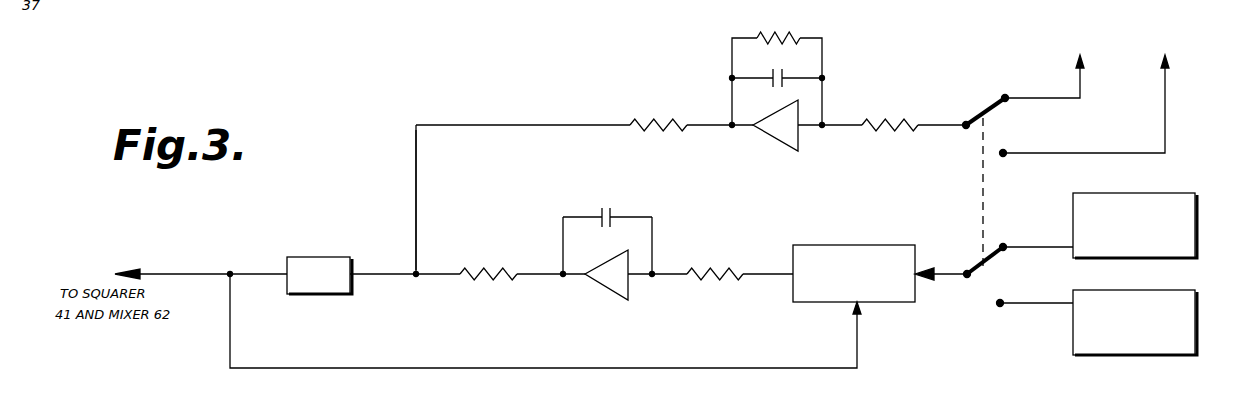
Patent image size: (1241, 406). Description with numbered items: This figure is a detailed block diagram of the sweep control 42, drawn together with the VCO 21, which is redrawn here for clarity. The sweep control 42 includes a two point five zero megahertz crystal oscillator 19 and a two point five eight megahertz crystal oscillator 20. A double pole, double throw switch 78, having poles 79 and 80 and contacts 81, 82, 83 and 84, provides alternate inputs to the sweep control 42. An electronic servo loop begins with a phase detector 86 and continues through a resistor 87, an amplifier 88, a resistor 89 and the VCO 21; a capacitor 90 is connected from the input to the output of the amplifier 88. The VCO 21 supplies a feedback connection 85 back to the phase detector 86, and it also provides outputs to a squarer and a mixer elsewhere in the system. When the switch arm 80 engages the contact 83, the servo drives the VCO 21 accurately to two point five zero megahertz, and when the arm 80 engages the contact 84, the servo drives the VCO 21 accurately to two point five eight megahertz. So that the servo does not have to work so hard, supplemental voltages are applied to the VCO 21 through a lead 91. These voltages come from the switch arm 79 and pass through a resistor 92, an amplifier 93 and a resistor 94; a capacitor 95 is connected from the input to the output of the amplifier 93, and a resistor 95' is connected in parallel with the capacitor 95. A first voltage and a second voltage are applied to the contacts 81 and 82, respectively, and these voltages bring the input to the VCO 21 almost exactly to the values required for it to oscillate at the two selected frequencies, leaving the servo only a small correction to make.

The 2.50 MHz crystal oscillator 19 is at (1182, 192).
The 2.58 MHz crystal oscillator 20 is at (1180, 290).
The VCO 21 is at (306, 256).
The sweep control 42 is at (560, 102).
The double pole, double throw switch 78 is at (955, 180).
The switch arm 79 is at (982, 118).
The switch arm 80 is at (972, 270).
The contact 81 is at (1017, 75).
The contact 82 is at (1004, 152).
The contact 83 is at (1005, 245).
The contact 84 is at (1002, 301).
The feedback connection 85 is at (341, 367).
The phase detector 86 is at (878, 302).
The resistor 87 is at (710, 271).
The amplifier 88 is at (597, 286).
The resistor 89 is at (503, 270).
The capacitor 90 is at (605, 207).
The lead 91 is at (416, 180).
The resistor 92 is at (877, 122).
The amplifier 93 is at (778, 141).
The resistor 94 is at (663, 122).
The capacitor 95 is at (777, 70).
The resistor 95' is at (801, 29).